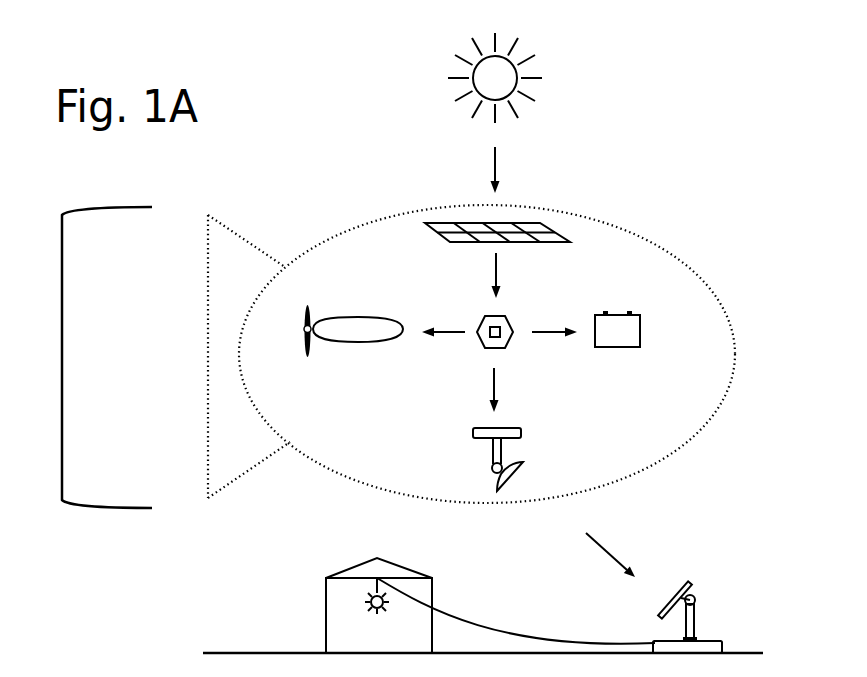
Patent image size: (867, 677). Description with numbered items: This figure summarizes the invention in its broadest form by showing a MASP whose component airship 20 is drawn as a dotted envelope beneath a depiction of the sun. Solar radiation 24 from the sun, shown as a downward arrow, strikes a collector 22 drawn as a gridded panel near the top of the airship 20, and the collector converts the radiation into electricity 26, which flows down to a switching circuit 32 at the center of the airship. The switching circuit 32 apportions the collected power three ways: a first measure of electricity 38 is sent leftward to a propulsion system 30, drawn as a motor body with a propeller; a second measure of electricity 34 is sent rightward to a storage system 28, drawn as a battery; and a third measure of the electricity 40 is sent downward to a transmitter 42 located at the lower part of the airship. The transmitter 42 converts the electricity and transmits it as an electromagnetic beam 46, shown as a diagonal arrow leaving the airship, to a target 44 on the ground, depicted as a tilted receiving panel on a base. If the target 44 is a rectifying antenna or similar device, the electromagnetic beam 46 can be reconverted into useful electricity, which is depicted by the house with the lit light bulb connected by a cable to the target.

The airship 20 is at (357, 247).
The collector 22 is at (563, 233).
The solar radiation 24 is at (498, 167).
The electricity 26 is at (490, 278).
The storage system 28 is at (640, 330).
The propulsion system 30 is at (357, 342).
The switching circuit 32 is at (510, 317).
The second measure of electricity 34 is at (552, 332).
The first measure of electricity 38 is at (450, 332).
The third measure of electricity 40 is at (492, 393).
The transmitter 42 is at (490, 445).
The target 44 is at (690, 600).
The electromagnetic beam 46 is at (617, 553).